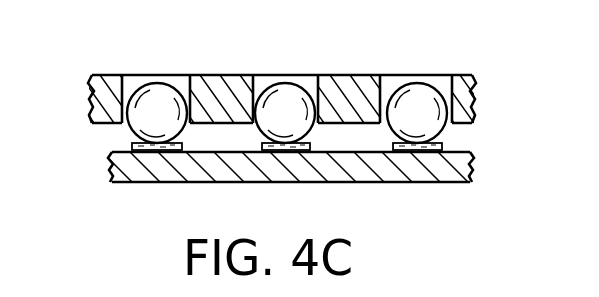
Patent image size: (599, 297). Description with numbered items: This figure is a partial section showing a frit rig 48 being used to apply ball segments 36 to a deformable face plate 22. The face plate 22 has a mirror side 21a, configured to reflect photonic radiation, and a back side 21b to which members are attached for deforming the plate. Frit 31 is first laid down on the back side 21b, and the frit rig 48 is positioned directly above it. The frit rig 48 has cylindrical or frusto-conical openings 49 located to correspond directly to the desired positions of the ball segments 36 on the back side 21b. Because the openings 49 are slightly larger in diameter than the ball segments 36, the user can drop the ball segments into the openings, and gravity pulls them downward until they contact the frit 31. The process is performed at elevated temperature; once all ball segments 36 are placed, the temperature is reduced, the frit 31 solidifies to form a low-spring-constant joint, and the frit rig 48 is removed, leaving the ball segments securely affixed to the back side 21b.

The frit rig 48 is at (370, 85).
The openings 49 is at (182, 85).
The ball segments 36 is at (305, 85).
The frit 31 is at (313, 147).
The deformable face plate 22 is at (183, 163).
The mirror side 21a is at (423, 185).
The back side 21b is at (130, 152).